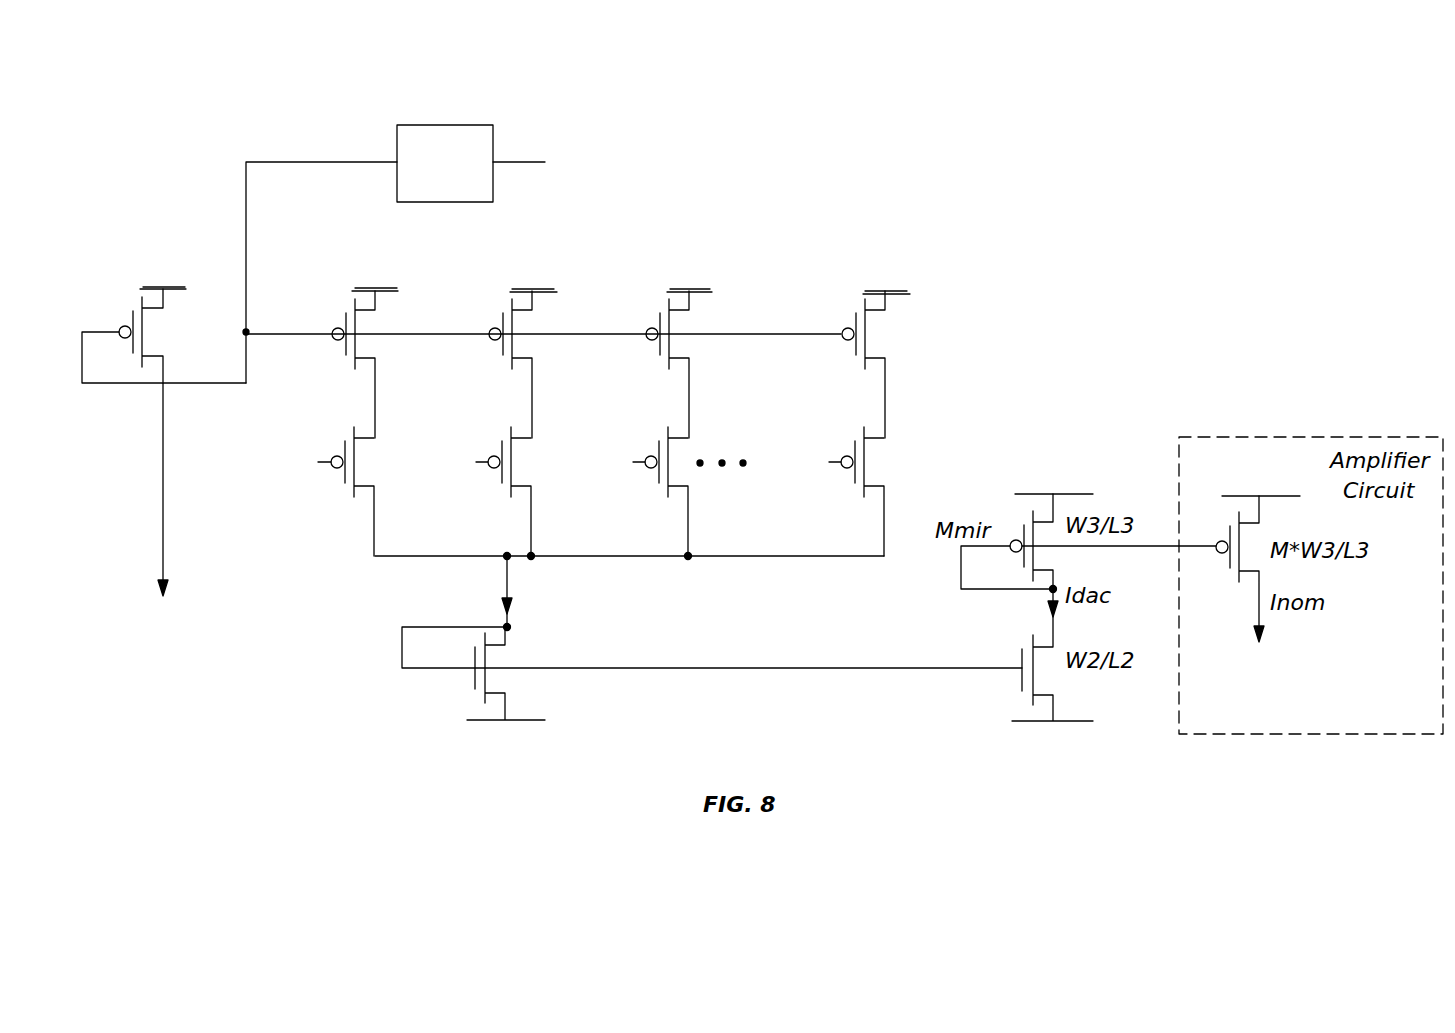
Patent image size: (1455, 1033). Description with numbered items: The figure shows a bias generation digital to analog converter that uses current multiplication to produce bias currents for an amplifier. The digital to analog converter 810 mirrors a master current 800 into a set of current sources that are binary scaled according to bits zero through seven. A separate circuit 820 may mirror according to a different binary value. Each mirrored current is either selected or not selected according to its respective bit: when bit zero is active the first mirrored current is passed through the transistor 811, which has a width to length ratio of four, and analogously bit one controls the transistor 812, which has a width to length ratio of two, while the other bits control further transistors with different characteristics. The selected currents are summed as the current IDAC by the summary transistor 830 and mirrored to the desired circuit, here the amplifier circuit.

The master current 800 is at (161, 494).
The digital to analog converter 810 is at (620, 375).
The transistor 811 is at (337, 327).
The transistor 812 is at (494, 327).
The separate circuit 820 is at (443, 125).
The summary transistor 830 is at (402, 648).